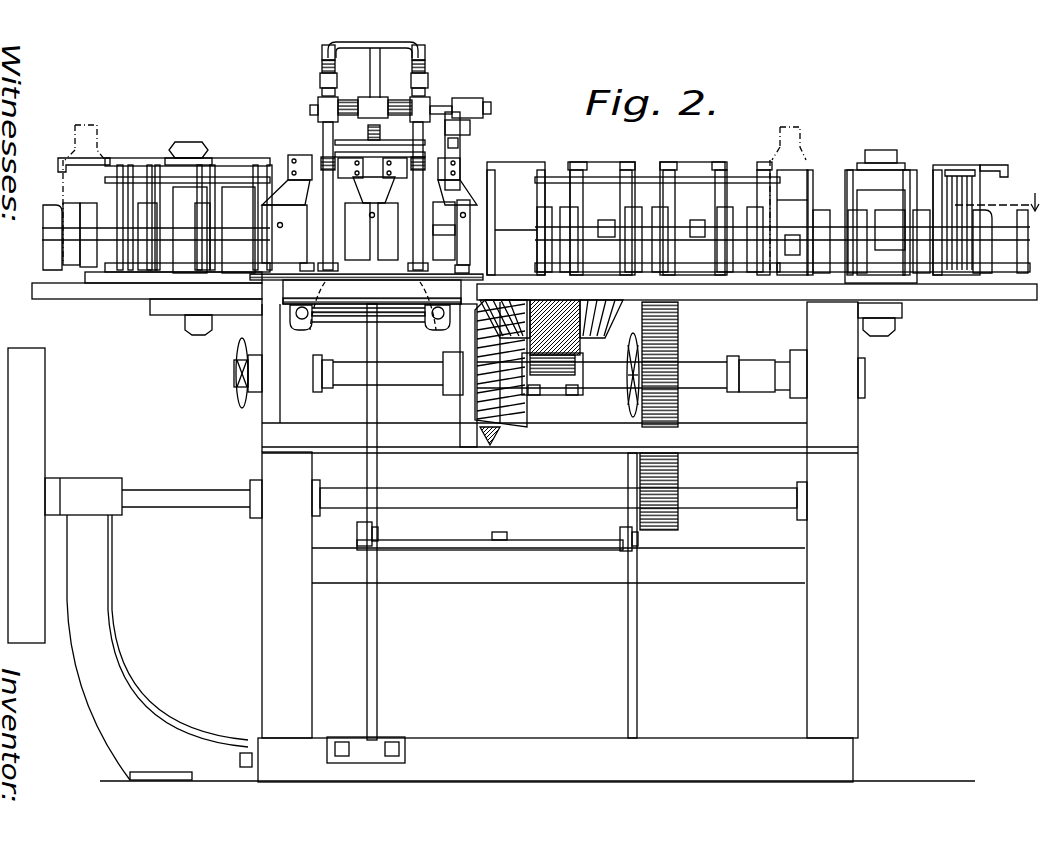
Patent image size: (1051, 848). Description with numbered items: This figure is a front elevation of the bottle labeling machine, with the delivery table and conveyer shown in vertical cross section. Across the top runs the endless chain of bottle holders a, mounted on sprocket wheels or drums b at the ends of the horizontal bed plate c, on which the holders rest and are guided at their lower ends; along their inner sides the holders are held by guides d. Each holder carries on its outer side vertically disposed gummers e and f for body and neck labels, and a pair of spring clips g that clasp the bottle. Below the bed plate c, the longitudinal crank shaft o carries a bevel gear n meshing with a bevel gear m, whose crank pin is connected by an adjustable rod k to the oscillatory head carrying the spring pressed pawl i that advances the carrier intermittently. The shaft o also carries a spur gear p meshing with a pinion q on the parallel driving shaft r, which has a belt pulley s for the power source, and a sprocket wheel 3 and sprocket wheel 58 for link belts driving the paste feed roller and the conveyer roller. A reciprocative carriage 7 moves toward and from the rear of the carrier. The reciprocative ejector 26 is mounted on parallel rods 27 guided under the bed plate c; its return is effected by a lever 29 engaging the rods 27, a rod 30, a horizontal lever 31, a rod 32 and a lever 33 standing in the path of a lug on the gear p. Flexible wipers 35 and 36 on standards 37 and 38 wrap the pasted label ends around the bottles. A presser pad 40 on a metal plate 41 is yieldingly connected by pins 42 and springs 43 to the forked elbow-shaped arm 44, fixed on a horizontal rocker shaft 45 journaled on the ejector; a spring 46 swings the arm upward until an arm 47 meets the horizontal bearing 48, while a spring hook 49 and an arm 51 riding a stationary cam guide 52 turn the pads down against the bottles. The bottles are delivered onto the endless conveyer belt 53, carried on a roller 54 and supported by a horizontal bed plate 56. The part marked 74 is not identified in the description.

The sprocket wheel 3 is at (627, 405).
The reciprocative carriage 7 is at (1039, 204).
The reciprocative ejector 26 is at (318, 122).
The parallel rods 27 is at (316, 326).
The lever 29 is at (377, 620).
The rod 30 is at (357, 538).
The horizontal lever 31 is at (550, 540).
The rod 32 is at (622, 548).
The lever 33 is at (628, 623).
The flexible wiper 35 is at (340, 162).
The flexible wiper 36 is at (366, 236).
The standard 37 is at (369, 194).
The standard 38 is at (374, 190).
The presser pad 40 is at (322, 92).
The metal plate or band 41 is at (320, 80).
The pin 42 is at (322, 50).
The spring 43 is at (322, 66).
The forked elbow-shaped arm 44 is at (373, 70).
The horizontal rocker shaft 45 is at (310, 110).
The spring 46 is at (366, 100).
The arm 47 is at (462, 118).
The horizontal bearing 48 is at (470, 127).
The spring hook 49 is at (375, 120).
The arm 51 is at (455, 100).
The stationary cam guide 52 is at (460, 145).
The endless conveyer belt 53 is at (435, 262).
The roller 54 is at (372, 305).
The horizontal bed plate 56 is at (338, 281).
The sprocket wheel 58 is at (236, 388).
The plate 74 is at (792, 206).
The bottle holder a is at (546, 200).
The sprocket wheel or drum b is at (238, 187).
The horizontal bed plate c is at (110, 290).
The guide d is at (693, 210).
The gummer e is at (43, 238).
The gummer f is at (58, 162).
The spring clip g is at (72, 210).
The spring pressed pawl i is at (516, 249).
The adjustable rod k is at (604, 220).
The bevel gear m is at (612, 318).
The bevel gear n is at (510, 412).
The longitudinal crank shaft o is at (560, 374).
The spur gear p is at (678, 335).
The pinion q is at (678, 530).
The driving shaft r is at (559, 500).
The belt pulley s is at (135, 564).